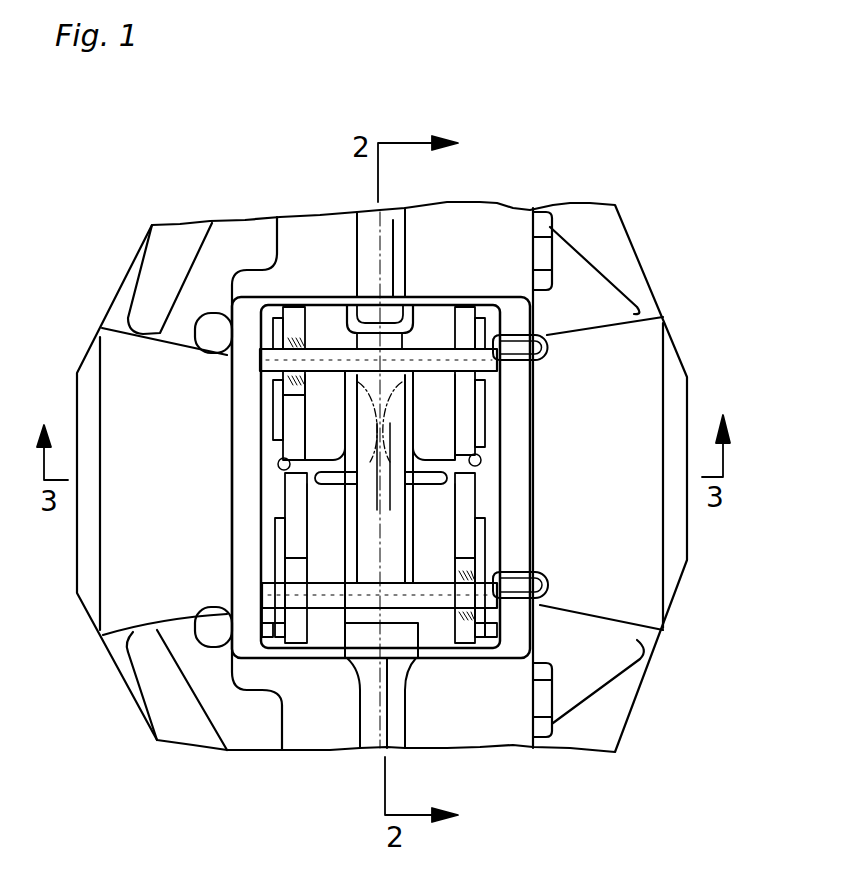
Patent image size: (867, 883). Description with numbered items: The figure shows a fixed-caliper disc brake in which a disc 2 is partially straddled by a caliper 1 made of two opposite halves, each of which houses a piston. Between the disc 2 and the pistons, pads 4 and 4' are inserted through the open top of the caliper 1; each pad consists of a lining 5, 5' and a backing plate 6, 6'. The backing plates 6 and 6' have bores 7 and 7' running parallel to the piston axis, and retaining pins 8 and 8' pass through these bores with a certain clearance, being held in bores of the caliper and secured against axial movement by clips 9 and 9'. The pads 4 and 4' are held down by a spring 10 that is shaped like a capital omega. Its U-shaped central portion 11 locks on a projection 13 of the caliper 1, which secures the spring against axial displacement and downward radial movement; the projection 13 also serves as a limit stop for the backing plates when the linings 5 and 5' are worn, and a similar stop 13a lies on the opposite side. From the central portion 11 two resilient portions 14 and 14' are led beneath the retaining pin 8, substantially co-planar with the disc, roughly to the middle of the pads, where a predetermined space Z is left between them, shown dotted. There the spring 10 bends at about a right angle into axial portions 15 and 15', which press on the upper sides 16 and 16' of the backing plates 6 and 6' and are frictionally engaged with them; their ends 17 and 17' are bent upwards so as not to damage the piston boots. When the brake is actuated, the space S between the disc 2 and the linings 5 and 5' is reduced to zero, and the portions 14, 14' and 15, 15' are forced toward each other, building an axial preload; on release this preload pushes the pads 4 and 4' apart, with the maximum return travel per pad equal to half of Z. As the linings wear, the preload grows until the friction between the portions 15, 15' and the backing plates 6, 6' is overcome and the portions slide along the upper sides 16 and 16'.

The caliper 1 is at (180, 246).
The disc 2 is at (388, 385).
The pad 4 is at (381, 508).
The pad 4' is at (383, 507).
The lining 5 is at (254, 537).
The lining 5' is at (509, 533).
The backing plate 6 is at (252, 558).
The backing plate 6' is at (515, 550).
The bore 7 is at (243, 377).
The bore 7' is at (517, 610).
The retaining pin 8 is at (332, 371).
The retaining pin 8' is at (430, 598).
The clip 9 is at (537, 322).
The clip 9' is at (548, 567).
The spring 10 is at (347, 332).
The U-shaped central portion 11 is at (398, 317).
The projection 13 is at (370, 307).
The bridge 13a is at (392, 645).
The resilient portion 14 is at (331, 497).
The resilient portion 14' is at (436, 477).
The axial portion 15 is at (332, 500).
The axial portion 15' is at (428, 499).
The upper side 16 is at (239, 386).
The upper side 16' is at (518, 381).
The end 17 is at (233, 486).
The end 17' is at (524, 439).
The space Z is at (362, 503).
The space S is at (327, 562).